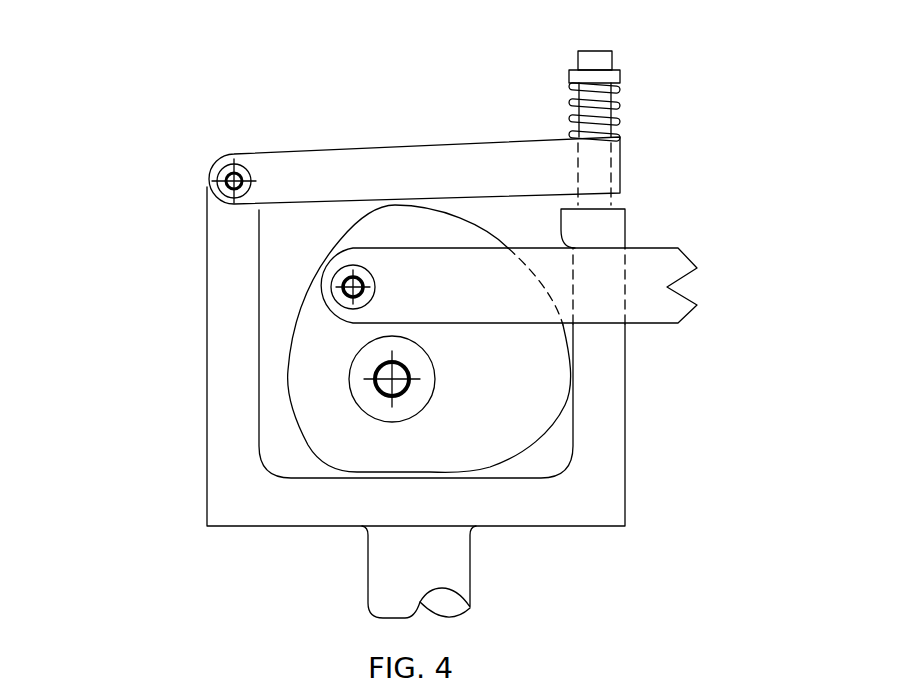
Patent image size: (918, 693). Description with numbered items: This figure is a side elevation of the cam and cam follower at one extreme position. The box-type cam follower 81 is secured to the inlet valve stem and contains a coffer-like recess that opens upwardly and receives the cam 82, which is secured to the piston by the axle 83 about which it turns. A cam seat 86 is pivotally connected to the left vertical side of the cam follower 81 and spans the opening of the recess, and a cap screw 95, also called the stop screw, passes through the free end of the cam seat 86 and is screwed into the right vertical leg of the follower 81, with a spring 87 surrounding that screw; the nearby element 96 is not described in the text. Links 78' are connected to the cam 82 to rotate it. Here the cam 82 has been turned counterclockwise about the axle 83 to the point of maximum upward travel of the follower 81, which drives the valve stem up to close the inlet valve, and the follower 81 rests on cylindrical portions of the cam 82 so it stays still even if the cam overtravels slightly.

The links 78' is at (546, 257).
The cam follower 81 is at (223, 338).
The cam 82 is at (515, 385).
The axle 83 is at (365, 395).
The cam seat 86 is at (406, 175).
The spring 87 is at (620, 128).
The cap screw 95 is at (598, 50).
The spring 96 is at (627, 107).